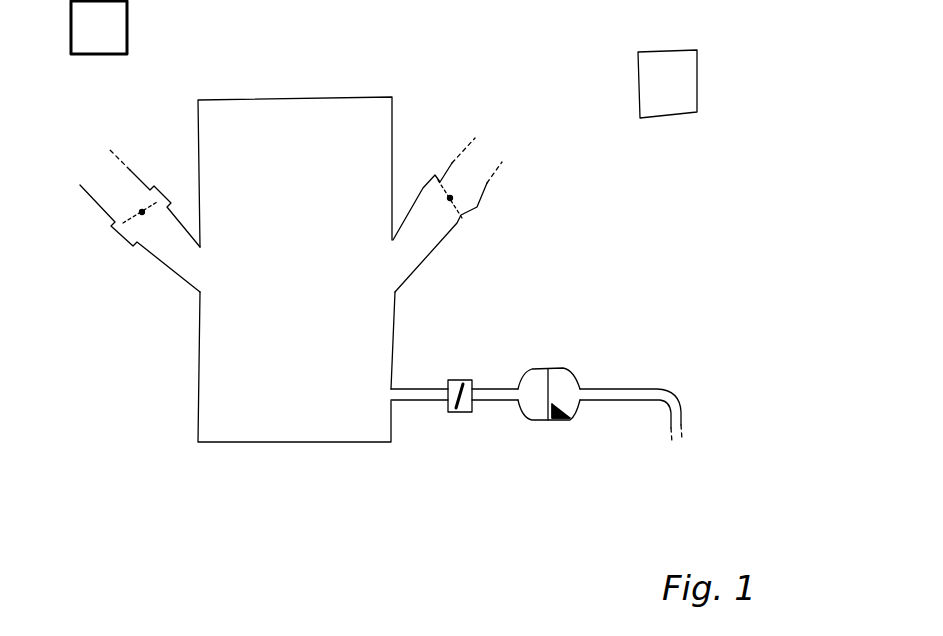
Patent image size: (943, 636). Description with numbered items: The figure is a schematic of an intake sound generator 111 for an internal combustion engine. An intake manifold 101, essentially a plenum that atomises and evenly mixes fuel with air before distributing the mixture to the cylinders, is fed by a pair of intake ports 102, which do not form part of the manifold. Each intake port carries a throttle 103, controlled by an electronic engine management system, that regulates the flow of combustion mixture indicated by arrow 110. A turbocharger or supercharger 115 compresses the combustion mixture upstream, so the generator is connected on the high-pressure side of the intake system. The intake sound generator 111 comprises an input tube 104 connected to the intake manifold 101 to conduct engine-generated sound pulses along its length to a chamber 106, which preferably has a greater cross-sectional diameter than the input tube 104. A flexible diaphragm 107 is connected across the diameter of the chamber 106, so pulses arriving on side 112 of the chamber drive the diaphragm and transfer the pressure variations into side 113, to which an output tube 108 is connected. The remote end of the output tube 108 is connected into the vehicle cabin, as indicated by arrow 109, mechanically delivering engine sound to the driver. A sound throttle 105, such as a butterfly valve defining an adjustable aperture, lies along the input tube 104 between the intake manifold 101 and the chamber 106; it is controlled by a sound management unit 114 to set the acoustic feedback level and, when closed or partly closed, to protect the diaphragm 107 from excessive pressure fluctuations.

The intake manifold 101 is at (323, 98).
The intake port 102 is at (163, 265).
The throttle 103 is at (127, 237).
The input tube 104 is at (413, 405).
The sound throttle 105 is at (463, 382).
The chamber 106 is at (570, 373).
The flexible diaphragm 107 is at (568, 420).
The output tube 108 is at (660, 388).
The arrow indicating connection into the cabin 109 is at (676, 445).
The arrow indicating combustion mixture flow 110 is at (99, 166).
The intake sound generator 111 is at (448, 521).
The input side of the chamber 112 is at (522, 405).
The output side of the chamber 113 is at (570, 400).
The sound management unit 114 is at (692, 78).
The turbocharger or supercharger 115 is at (111, 34).